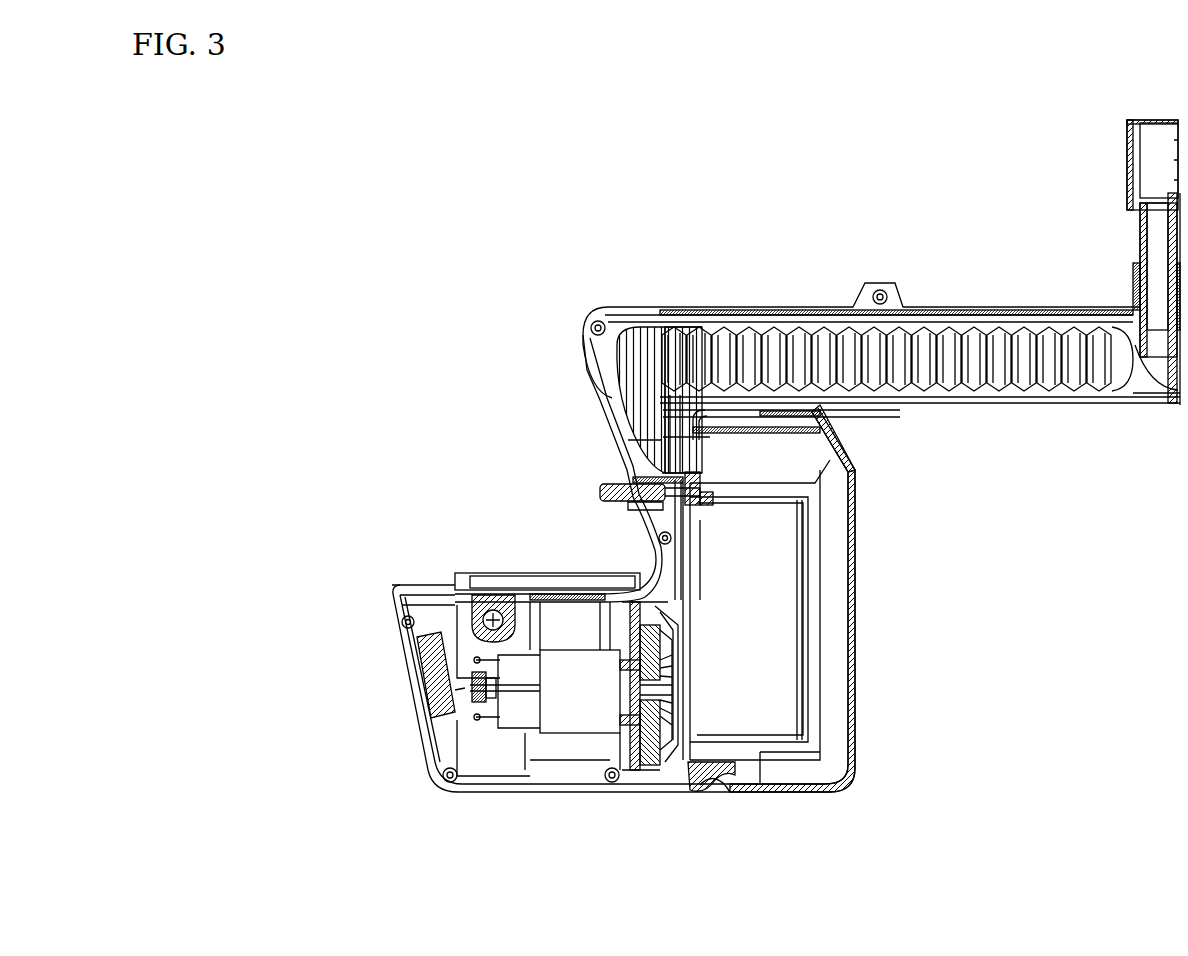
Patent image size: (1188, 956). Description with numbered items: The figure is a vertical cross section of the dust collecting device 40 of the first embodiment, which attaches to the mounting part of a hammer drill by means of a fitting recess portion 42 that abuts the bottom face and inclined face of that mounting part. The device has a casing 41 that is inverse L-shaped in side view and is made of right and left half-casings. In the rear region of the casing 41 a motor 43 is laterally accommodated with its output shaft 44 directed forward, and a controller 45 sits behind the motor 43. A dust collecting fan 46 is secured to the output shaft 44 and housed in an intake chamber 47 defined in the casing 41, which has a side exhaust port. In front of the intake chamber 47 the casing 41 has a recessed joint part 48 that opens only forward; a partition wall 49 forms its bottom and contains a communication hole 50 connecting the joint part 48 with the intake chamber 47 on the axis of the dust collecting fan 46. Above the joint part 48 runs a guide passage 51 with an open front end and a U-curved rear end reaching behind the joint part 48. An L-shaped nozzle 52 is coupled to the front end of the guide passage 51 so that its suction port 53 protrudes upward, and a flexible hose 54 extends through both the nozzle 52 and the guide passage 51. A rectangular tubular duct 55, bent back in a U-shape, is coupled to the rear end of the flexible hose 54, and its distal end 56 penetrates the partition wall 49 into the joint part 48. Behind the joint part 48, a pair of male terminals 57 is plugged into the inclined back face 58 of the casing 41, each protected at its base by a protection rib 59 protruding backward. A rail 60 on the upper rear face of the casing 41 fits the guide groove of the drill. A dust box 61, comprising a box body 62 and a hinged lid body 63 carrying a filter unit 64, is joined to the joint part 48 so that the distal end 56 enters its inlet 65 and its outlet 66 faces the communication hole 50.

The dust collecting device 40 is at (790, 300).
The casing 41 is at (692, 307).
The fitting recess portion 42 is at (580, 383).
The motor 43 is at (573, 722).
The output shaft 44 is at (665, 690).
The controller 45 is at (435, 686).
The dust collecting fan 46 is at (658, 770).
The intake chamber 47 is at (680, 782).
The joint part 48 is at (740, 408).
The partition wall 49 is at (692, 613).
The communication hole 50 is at (683, 703).
The guide passage 51 is at (612, 340).
The nozzle 52 is at (1092, 318).
The suction port 53 is at (1150, 140).
The flexible hose 54 is at (948, 330).
The duct 55 is at (636, 410).
The distal end 56 is at (712, 459).
The male terminal 57 is at (600, 491).
The inclined back face 58 is at (618, 455).
The protection rib 59 is at (632, 510).
The rail 60 is at (530, 580).
The dust box 61 is at (860, 530).
The box body 62 is at (855, 700).
The lid body 63 is at (636, 478).
The filter unit 64 is at (815, 612).
The inlet 65 is at (670, 360).
The outlet 66 is at (690, 505).